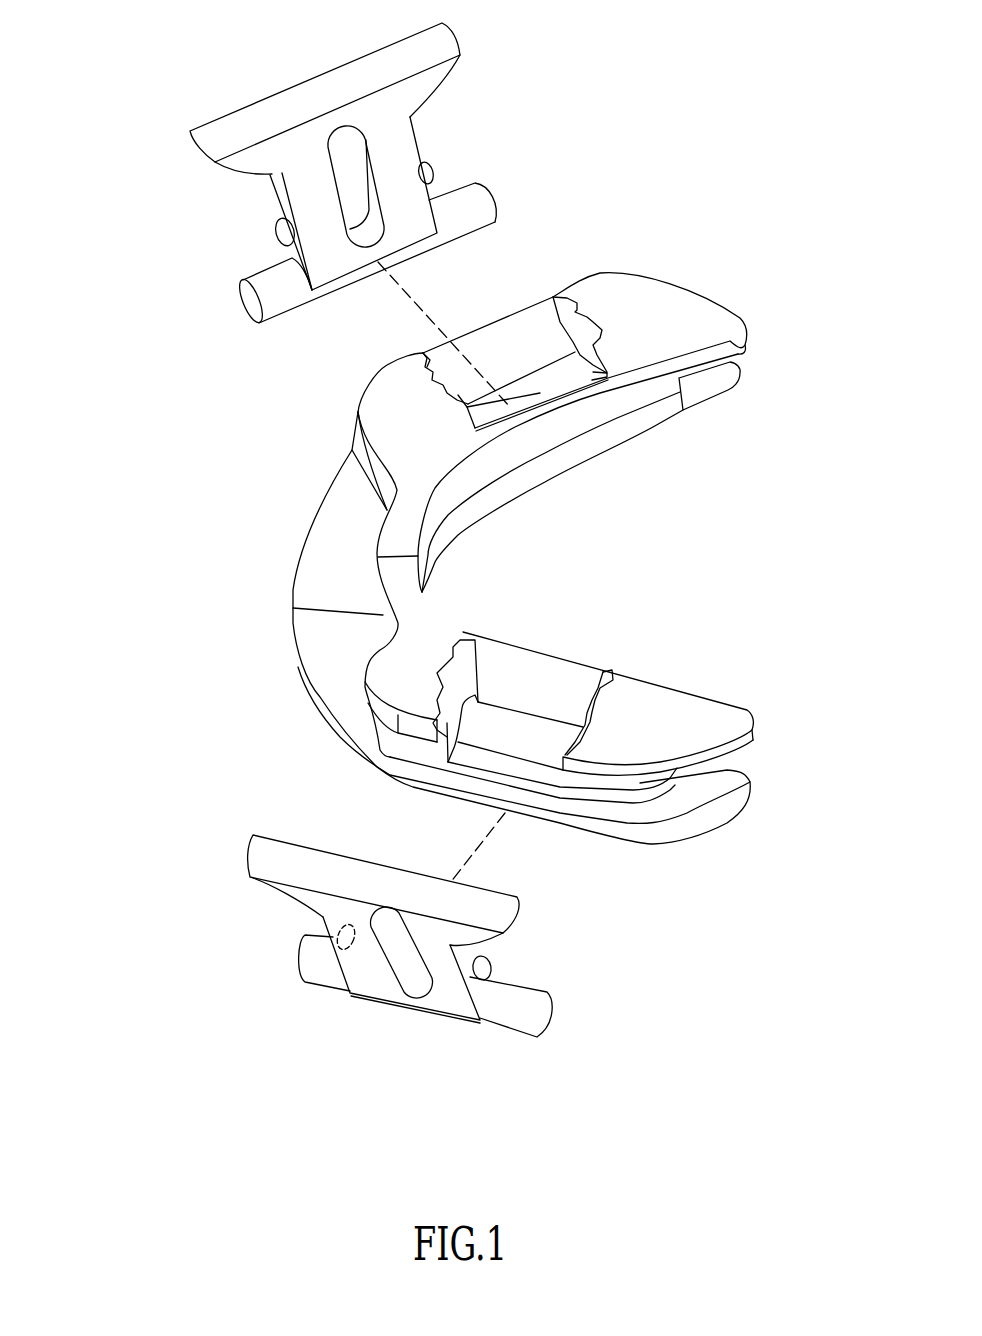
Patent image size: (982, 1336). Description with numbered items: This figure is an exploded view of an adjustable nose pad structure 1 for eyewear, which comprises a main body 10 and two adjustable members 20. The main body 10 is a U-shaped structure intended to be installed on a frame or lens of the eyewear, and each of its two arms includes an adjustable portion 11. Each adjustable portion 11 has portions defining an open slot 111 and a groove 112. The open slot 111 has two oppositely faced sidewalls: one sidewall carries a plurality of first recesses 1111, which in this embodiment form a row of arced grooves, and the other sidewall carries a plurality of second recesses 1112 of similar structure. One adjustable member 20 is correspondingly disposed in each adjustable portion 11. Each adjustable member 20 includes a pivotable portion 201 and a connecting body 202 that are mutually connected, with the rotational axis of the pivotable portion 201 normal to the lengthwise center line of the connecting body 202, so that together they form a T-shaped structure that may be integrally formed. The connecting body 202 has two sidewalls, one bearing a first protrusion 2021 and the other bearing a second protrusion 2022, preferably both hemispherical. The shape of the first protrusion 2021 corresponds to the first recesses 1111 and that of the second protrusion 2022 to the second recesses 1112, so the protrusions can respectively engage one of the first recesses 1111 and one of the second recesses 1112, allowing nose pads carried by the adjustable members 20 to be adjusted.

The adjustable nose pad structure 1 is at (114, 19).
The main body 10 is at (337, 550).
The adjustable portion 11 is at (705, 690).
The open slot 111 is at (507, 353).
The first recesses 1111 is at (430, 383).
The second recesses 1112 is at (587, 313).
The groove 112 is at (513, 732).
The adjustable member 20 is at (262, 115).
The pivotable portion 201 is at (470, 208).
The connecting body 202 is at (308, 190).
The first protrusion 2021 is at (283, 232).
The second protrusion 2022 is at (427, 165).